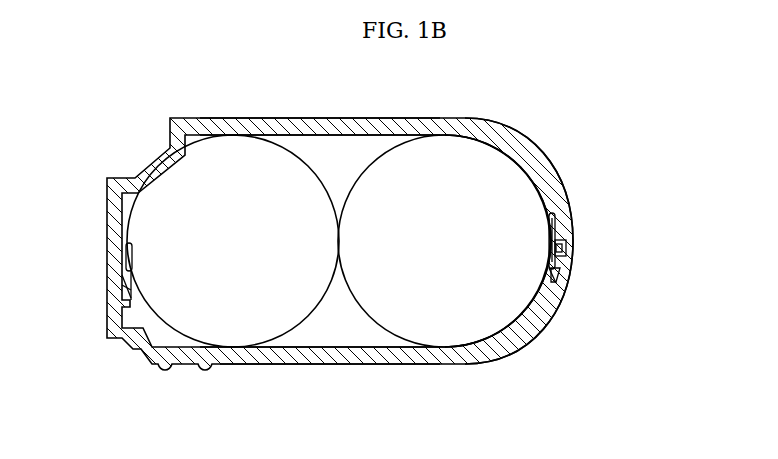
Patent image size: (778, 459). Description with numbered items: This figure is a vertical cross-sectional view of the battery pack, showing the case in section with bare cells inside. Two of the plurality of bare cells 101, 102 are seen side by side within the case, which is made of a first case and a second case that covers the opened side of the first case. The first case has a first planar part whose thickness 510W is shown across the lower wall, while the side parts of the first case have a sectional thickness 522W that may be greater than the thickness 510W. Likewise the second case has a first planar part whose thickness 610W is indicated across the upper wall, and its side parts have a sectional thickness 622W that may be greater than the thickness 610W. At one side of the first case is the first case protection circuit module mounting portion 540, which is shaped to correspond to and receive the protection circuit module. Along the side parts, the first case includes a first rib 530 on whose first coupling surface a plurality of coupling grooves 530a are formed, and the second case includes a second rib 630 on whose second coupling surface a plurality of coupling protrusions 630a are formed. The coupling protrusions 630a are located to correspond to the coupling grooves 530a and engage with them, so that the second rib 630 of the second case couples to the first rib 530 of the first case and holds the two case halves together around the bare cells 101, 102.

The bare cell 101 is at (233, 241).
The bare cell 102 is at (444, 241).
The thickness of the first planar part 610W is at (337, 155).
The thickness of the first planar part 510W is at (336, 322).
The sectional thickness of the side parts 622W is at (497, 194).
The sectional thickness of the side parts 522W is at (497, 295).
The first rib 530 is at (553, 218).
The first case protection circuit module mounting portion 540 is at (572, 268).
The second rib 630 is at (562, 248).
The coupling protrusions 630a is at (568, 287).
The coupling grooves 530a is at (597, 323).